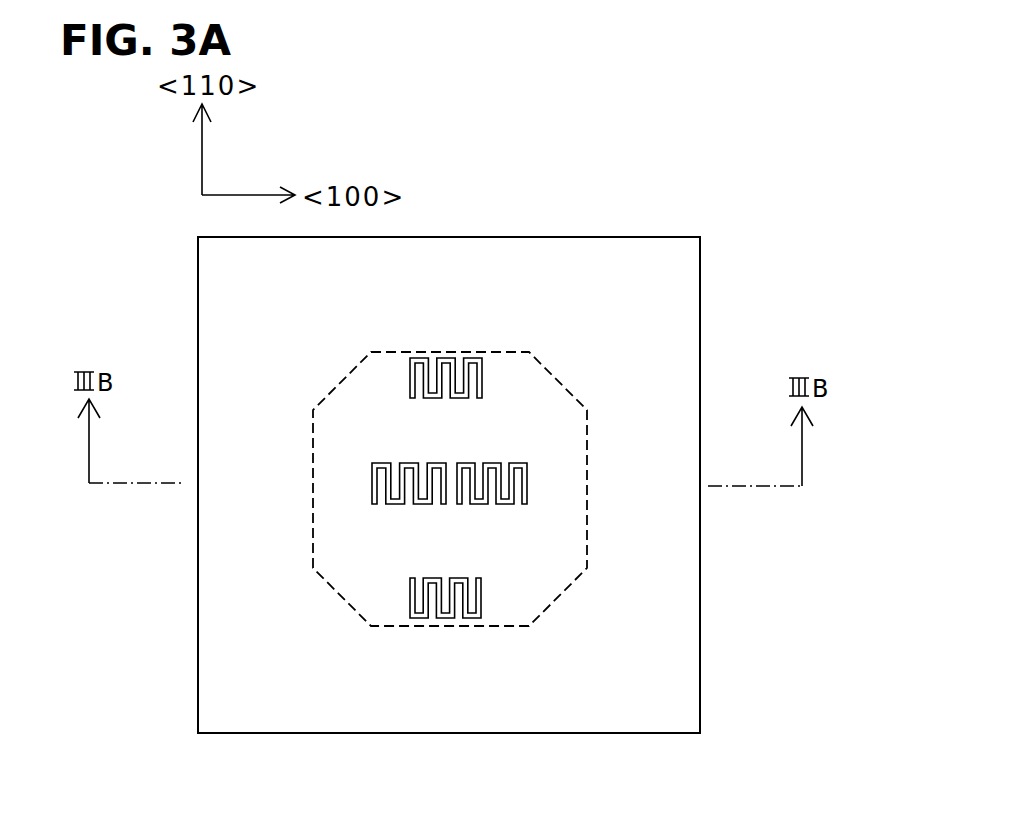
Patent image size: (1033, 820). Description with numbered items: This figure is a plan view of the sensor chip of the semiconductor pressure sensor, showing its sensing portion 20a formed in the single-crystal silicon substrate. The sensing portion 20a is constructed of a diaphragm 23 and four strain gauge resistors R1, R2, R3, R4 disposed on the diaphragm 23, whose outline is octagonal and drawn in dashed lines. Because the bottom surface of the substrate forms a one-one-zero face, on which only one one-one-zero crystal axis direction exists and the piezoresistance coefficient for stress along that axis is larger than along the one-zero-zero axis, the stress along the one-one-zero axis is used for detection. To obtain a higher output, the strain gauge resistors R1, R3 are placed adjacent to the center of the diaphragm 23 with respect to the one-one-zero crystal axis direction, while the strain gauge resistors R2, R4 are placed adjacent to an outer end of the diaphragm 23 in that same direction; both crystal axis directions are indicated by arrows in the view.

The strain gauge resistor R1 is at (372, 485).
The strain gauge resistor R2 is at (448, 618).
The strain gauge resistor R3 is at (527, 486).
The strain gauge resistor R4 is at (452, 358).
The sensing portion 20a is at (548, 332).
The diaphragm 23 is at (558, 383).